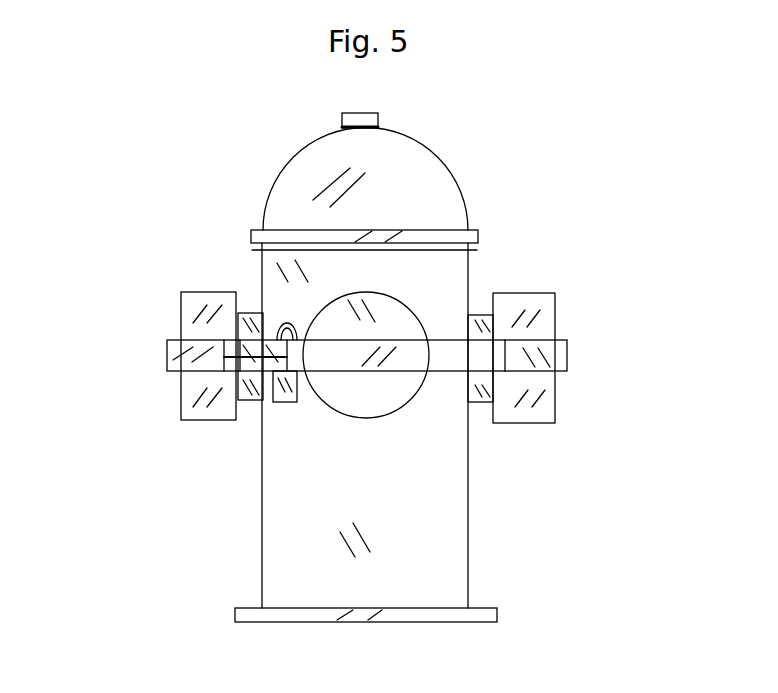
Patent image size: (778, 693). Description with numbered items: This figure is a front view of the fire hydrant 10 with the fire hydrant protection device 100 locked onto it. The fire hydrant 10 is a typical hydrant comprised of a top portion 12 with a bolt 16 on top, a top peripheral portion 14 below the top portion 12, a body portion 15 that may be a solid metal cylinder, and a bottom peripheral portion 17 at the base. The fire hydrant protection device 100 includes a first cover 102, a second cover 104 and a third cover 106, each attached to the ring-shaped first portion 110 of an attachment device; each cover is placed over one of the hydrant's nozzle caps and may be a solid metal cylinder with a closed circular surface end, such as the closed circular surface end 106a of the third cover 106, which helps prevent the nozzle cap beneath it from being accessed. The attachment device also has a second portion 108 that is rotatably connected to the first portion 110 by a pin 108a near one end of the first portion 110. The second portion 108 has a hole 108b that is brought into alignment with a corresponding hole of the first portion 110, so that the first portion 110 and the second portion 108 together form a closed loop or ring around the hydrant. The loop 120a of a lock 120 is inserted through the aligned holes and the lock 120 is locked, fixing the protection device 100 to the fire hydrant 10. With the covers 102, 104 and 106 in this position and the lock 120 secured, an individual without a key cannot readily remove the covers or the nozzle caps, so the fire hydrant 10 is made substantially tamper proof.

The fire hydrant 10 is at (510, 194).
The top portion 12 is at (397, 165).
The top peripheral portion 14 is at (477, 238).
The body portion 15 is at (438, 573).
The bolt 16 is at (363, 122).
The bottom peripheral portion 17 is at (480, 615).
The fire hydrant protection device 100 is at (458, 395).
The first cover 102 is at (193, 307).
The second cover 104 is at (550, 310).
The third cover 106 is at (387, 320).
The closed circular surface end 106a is at (363, 423).
The second portion 108 is at (252, 368).
The pin 108a is at (233, 368).
The hole 108b is at (290, 357).
The first portion 110 is at (442, 365).
The lock 120 is at (283, 402).
The loop 120a is at (288, 322).